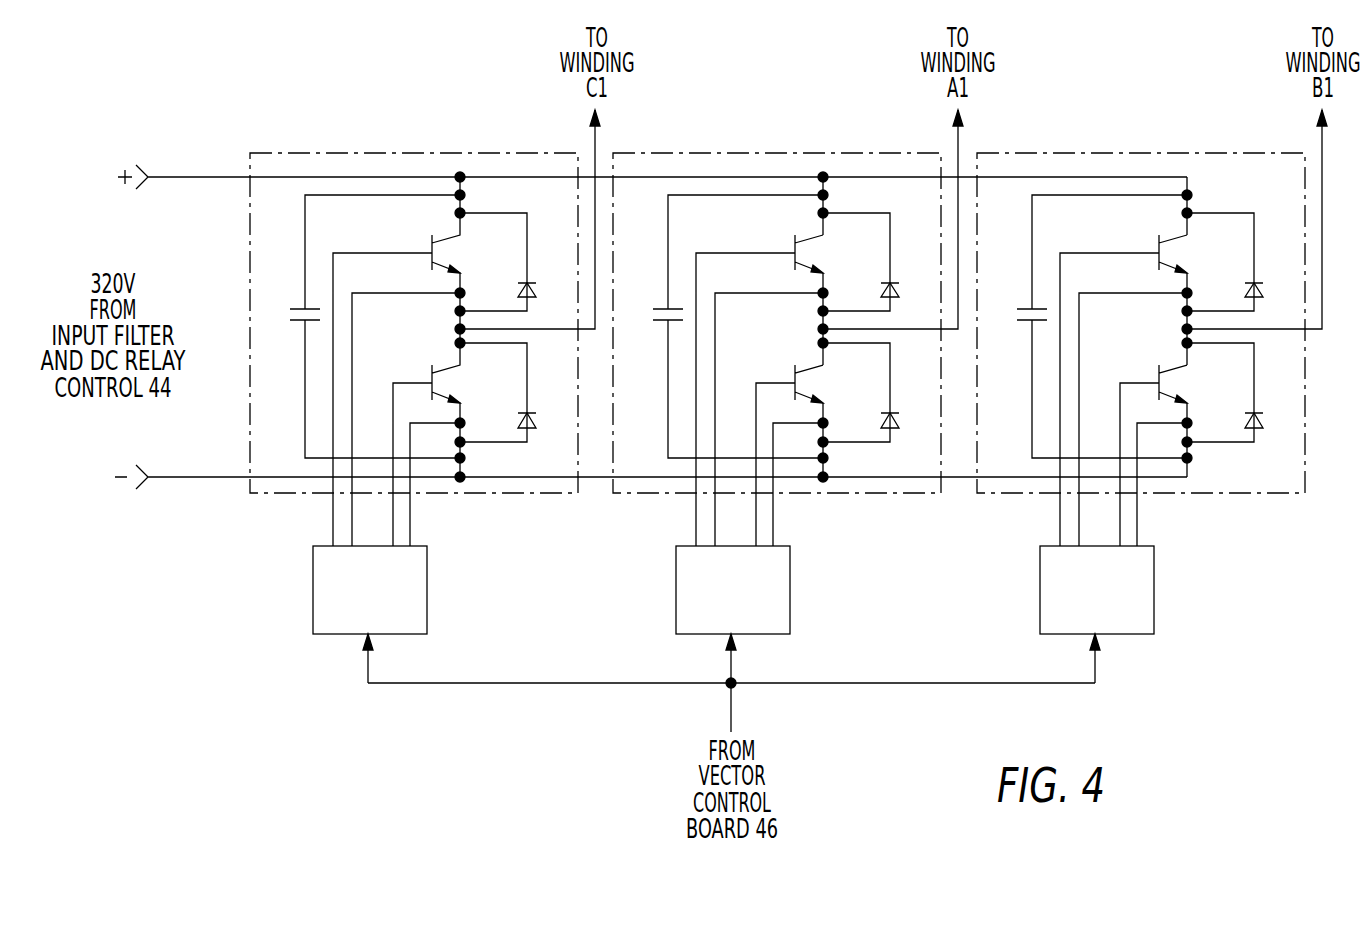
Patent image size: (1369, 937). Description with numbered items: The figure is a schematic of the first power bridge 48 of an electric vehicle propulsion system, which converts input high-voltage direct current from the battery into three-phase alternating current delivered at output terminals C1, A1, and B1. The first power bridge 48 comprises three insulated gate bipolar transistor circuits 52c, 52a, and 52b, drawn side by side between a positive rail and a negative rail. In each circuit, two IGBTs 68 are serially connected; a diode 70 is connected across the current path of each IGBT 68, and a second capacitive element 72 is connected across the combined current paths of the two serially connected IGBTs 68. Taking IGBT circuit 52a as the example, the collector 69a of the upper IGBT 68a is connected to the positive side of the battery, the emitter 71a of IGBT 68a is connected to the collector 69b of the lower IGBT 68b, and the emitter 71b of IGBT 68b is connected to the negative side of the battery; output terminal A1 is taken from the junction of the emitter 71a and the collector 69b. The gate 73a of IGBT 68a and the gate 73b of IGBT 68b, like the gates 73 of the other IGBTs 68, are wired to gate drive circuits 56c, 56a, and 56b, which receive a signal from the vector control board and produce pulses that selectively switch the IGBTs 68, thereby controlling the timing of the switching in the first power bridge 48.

The first power bridge 48 is at (268, 98).
The IGBT circuit 52c is at (343, 152).
The IGBT circuit 52a is at (707, 152).
The IGBT circuit 52b is at (1070, 152).
The insulated gate bipolar transistor 68 is at (444, 226).
The gate 73 is at (432, 237).
The diode 70 is at (537, 290).
The second capacitive element 72 is at (292, 313).
The IGBT 68a is at (807, 226).
The collector 69a is at (826, 238).
The emitter 71a is at (826, 272).
The gate 73a is at (795, 237).
The IGBT 68b is at (807, 356).
The collector 69b is at (826, 368).
The emitter 71b is at (826, 402).
The gate 73b is at (795, 367).
The gate drive circuit 56c is at (428, 567).
The gate drive circuit 56a is at (791, 567).
The gate drive circuit 56b is at (1155, 567).